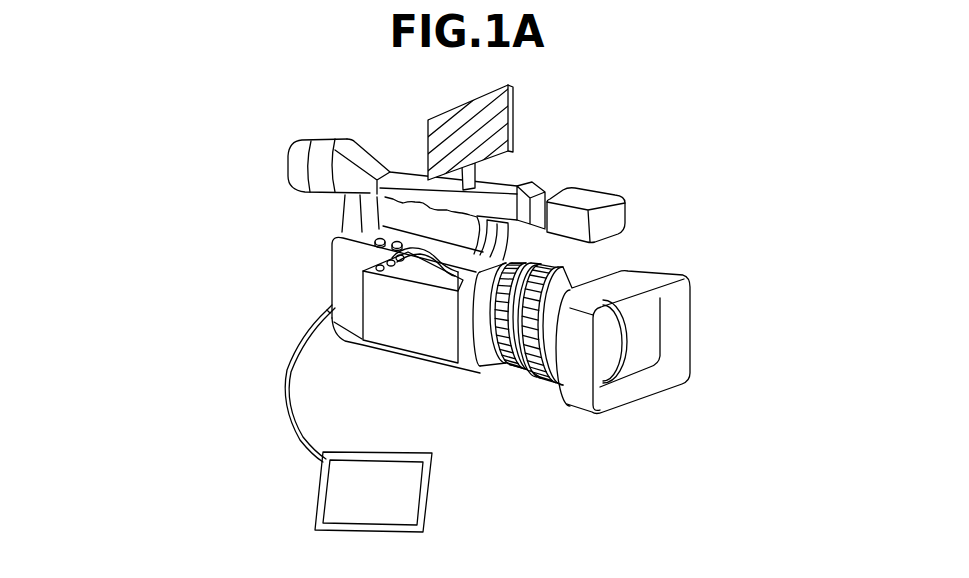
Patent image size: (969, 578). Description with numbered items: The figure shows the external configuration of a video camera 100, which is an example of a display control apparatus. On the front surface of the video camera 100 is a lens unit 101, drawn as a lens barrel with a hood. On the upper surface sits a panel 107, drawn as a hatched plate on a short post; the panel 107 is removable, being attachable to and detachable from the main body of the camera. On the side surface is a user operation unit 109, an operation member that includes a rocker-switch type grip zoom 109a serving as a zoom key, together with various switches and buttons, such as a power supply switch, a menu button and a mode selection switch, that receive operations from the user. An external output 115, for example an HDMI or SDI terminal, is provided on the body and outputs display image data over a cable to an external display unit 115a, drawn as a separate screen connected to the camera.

The image capturing apparatus (camcorder) 100 is at (648, 166).
The lens 101 is at (602, 340).
The microphone 107 is at (513, 118).
The accessory / connector cover panel 109 is at (375, 274).
The opening of cover panel 109a is at (445, 281).
The cable 115 is at (326, 310).
The external monitor 115a is at (427, 493).